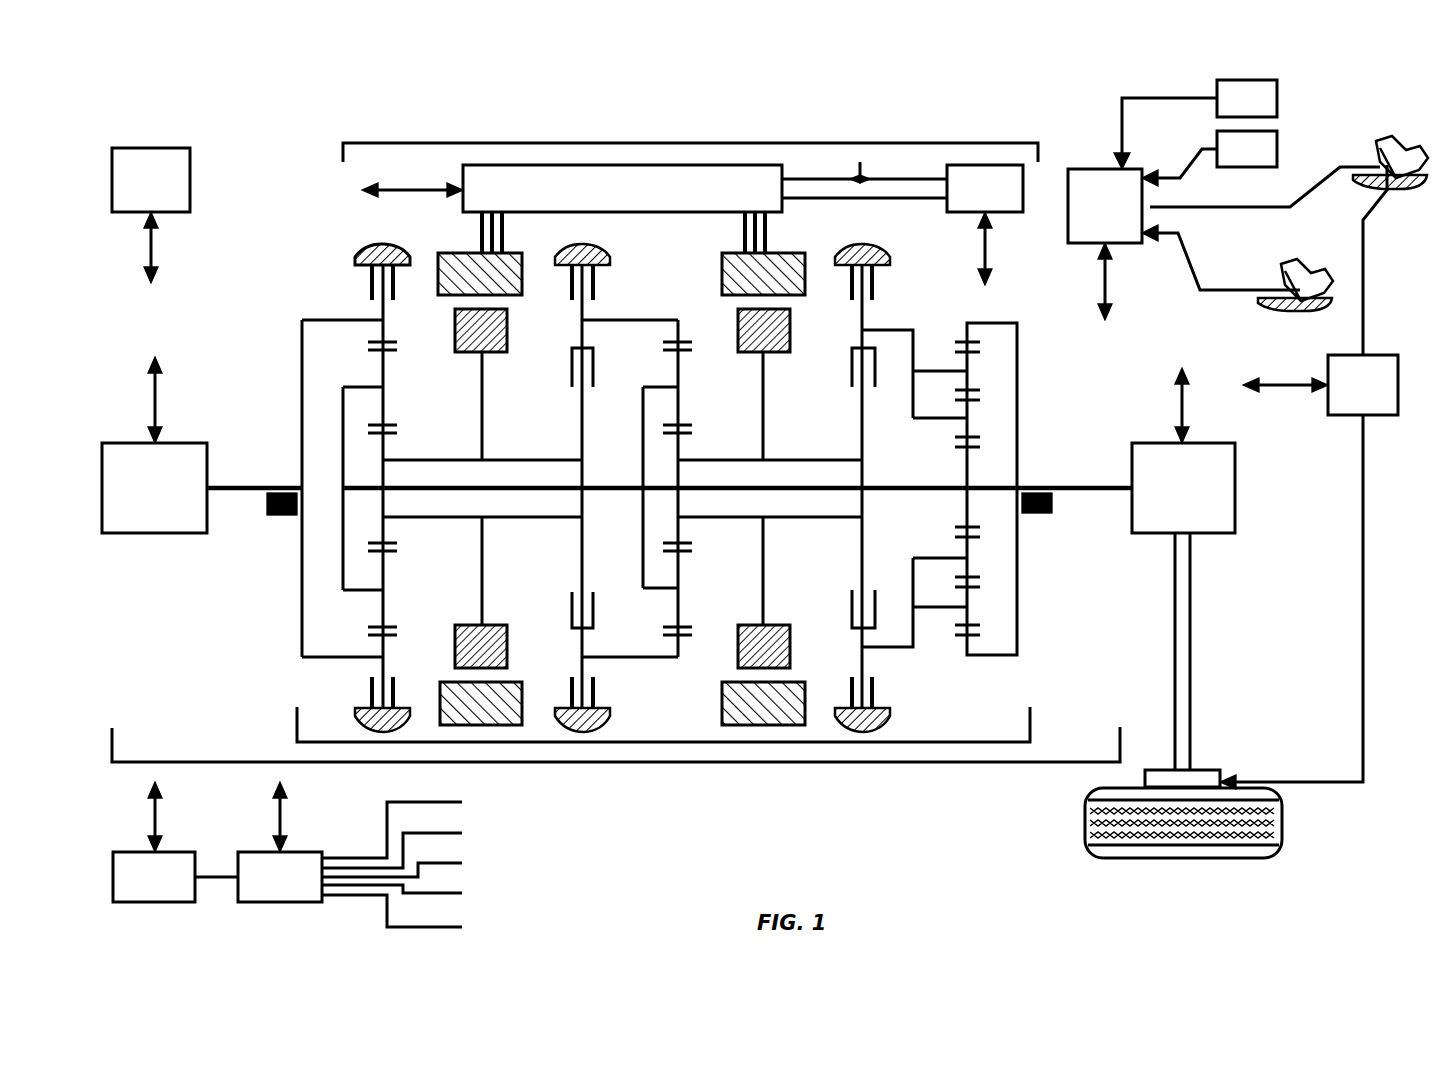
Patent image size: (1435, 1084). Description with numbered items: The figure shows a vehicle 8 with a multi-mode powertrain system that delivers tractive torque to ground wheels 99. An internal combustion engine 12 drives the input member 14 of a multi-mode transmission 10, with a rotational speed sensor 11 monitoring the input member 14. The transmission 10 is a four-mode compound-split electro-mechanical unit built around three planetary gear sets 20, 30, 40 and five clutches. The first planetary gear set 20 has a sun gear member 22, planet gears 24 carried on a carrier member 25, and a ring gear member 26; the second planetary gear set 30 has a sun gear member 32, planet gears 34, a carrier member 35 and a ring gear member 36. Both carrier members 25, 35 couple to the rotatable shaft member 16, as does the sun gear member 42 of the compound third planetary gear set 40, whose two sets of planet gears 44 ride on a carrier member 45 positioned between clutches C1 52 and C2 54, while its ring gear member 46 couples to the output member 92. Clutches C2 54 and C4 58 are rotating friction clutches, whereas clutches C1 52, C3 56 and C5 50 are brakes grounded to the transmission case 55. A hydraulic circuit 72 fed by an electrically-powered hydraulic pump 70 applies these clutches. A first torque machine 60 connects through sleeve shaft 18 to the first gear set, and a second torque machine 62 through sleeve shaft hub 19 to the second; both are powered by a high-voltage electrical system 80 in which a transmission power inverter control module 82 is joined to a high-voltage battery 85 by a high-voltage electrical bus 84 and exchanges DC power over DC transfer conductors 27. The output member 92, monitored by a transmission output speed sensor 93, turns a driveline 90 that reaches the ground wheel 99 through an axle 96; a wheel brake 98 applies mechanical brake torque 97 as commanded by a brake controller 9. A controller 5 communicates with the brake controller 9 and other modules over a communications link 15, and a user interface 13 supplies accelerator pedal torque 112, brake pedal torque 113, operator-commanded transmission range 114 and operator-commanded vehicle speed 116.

The controller 5 is at (151, 180).
The vehicle 8 is at (856, 118).
The brake controller 9 is at (1363, 385).
The multi-mode transmission 10 is at (795, 742).
The rotational speed sensor 11 is at (282, 515).
The internal combustion engine 12 is at (154, 488).
The user interface 13 is at (1224, 205).
The input member 14 is at (248, 490).
The communications link 15 is at (721, 507).
The rotatable shaft member 16 is at (595, 488).
The sleeve shaft 18 is at (535, 460).
The sleeve shaft hub 19 is at (828, 460).
The planetary gear set 20 is at (400, 535).
The sun gear member 22 is at (392, 440).
The planet gears 24 is at (390, 387).
The carrier member 25 is at (343, 458).
The ring gear member 26 is at (392, 342).
The DC transfer conductors 27 is at (500, 230).
The planetary gear set 30 is at (697, 582).
The sun gear member 32 is at (688, 440).
The planet gears 34 is at (688, 387).
The carrier member 35 is at (643, 505).
The ring gear member 36 is at (683, 342).
The planetary gear set 40 is at (945, 470).
The sun gear member 42 is at (978, 530).
The planet gears 44 is at (980, 575).
The carrier member 45 is at (913, 330).
The ring gear member 46 is at (960, 640).
The clutch C5 50 is at (372, 290).
The clutch C1 52 is at (878, 290).
The clutch C2 54 is at (852, 375).
The transmission case 55 is at (366, 250).
The clutch C3 56 is at (600, 283).
The clutch C4 58 is at (572, 375).
The first torque machine 60 is at (495, 313).
The second torque machine 62 is at (780, 313).
The electrically-powered hydraulic pump 70 is at (175, 877).
The hydraulic circuit 72 is at (366, 864).
The high-voltage electrical system 80 is at (700, 143).
The transmission power inverter control module 82 is at (622, 188).
The high-voltage electrical bus 84 is at (898, 179).
The high-voltage battery 85 is at (985, 188).
The driveline 90 is at (1183, 488).
The output member 92 is at (1078, 488).
The transmission output speed sensor 93 is at (1052, 508).
The axle 96 is at (1200, 640).
The mechanical brake torque 97 is at (1291, 602).
The wheel brake 98 is at (1228, 770).
The ground wheel 99 is at (1282, 830).
The accelerator pedal torque 112 is at (1285, 297).
The brake pedal torque 113 is at (1365, 163).
The operator-commanded transmission range 114 is at (1209, 158).
The operator-commanded vehicle speed 116 is at (1195, 124).